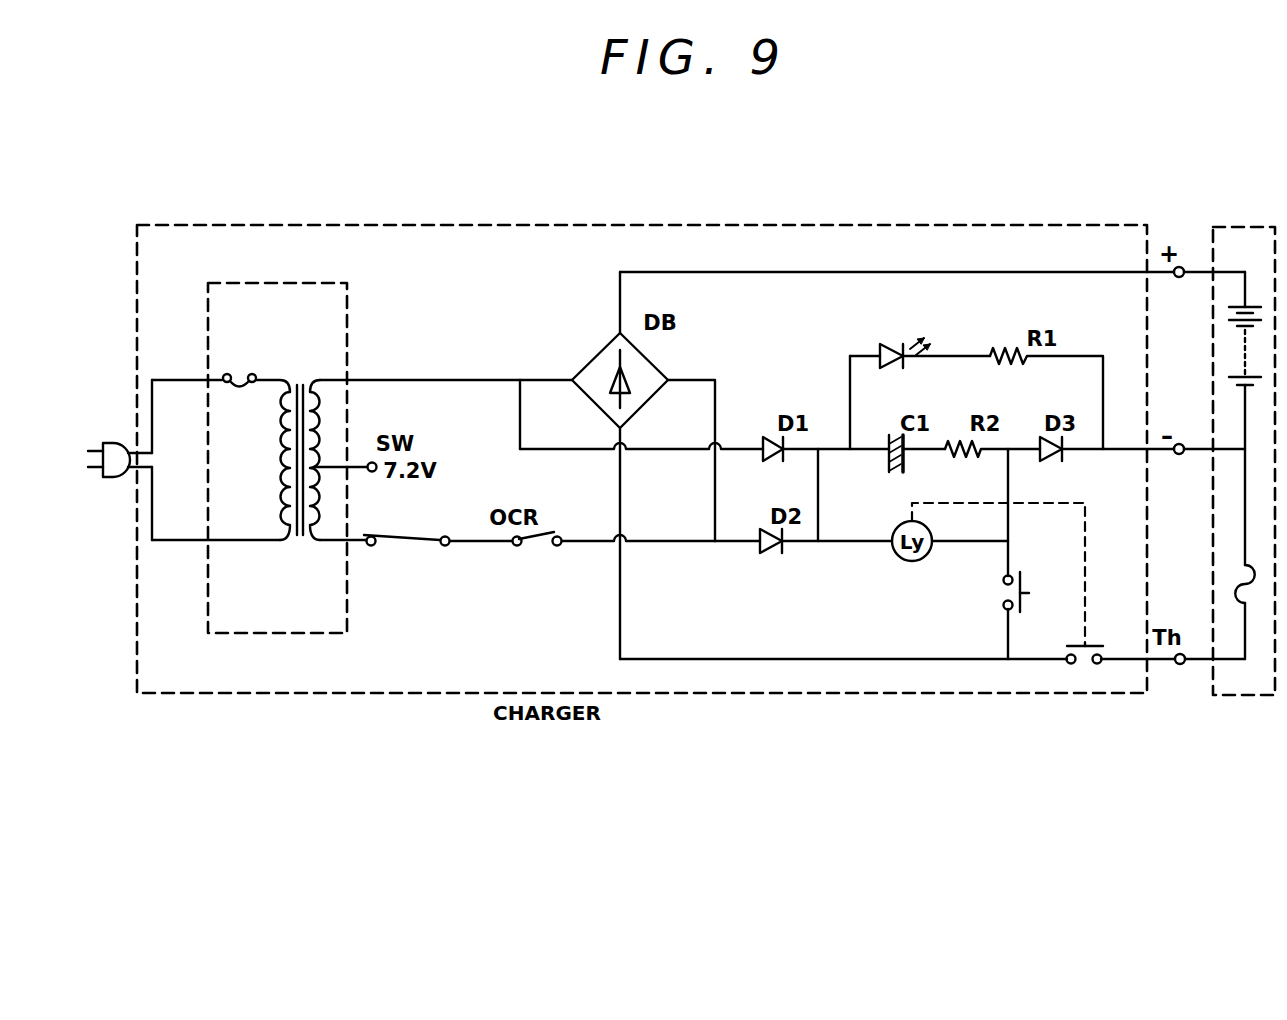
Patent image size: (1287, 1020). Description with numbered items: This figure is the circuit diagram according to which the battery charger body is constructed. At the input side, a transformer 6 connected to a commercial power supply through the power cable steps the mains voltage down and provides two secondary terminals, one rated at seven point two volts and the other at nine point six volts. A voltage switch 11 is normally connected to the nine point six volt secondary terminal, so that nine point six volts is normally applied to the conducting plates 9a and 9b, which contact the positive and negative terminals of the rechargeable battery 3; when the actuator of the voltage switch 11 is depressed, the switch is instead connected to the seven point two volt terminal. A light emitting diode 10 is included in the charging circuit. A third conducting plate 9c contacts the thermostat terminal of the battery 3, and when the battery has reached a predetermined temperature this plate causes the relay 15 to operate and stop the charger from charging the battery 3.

The secondary battery 3 is at (1250, 228).
The transformer 6 is at (347, 312).
The conducting plate 9a is at (1181, 267).
The conducting plate 9b is at (1179, 455).
The conducting plate 9c is at (1178, 665).
The light emitting diode 10 is at (884, 347).
The voltage switch 11 is at (390, 546).
The relay 15 is at (1086, 598).